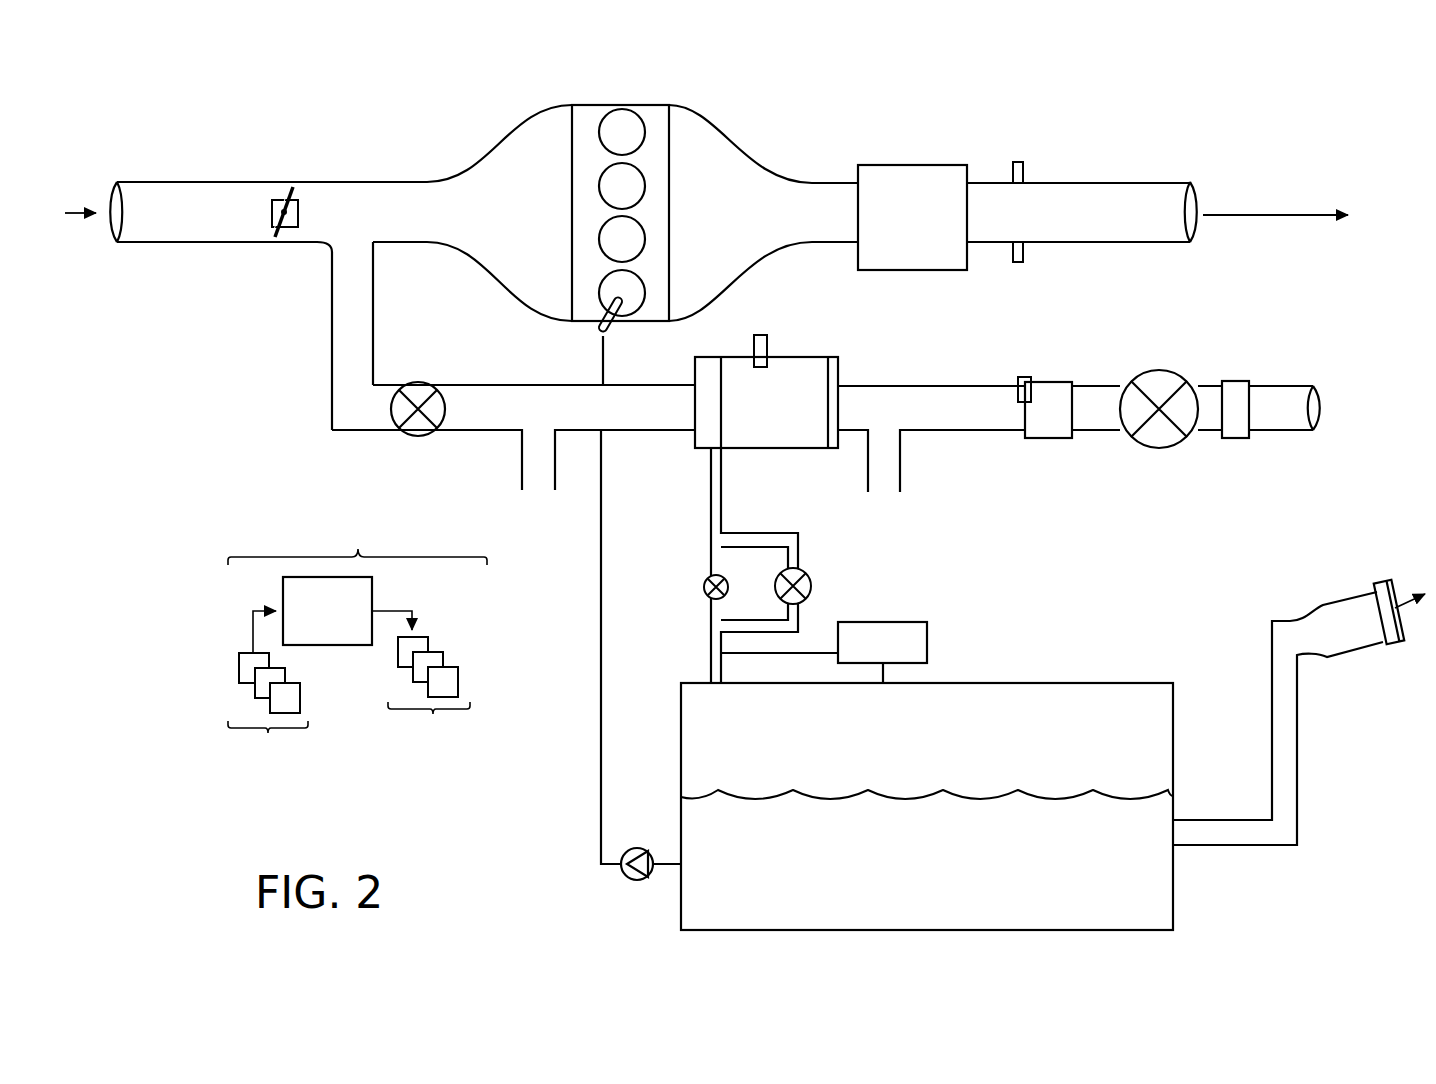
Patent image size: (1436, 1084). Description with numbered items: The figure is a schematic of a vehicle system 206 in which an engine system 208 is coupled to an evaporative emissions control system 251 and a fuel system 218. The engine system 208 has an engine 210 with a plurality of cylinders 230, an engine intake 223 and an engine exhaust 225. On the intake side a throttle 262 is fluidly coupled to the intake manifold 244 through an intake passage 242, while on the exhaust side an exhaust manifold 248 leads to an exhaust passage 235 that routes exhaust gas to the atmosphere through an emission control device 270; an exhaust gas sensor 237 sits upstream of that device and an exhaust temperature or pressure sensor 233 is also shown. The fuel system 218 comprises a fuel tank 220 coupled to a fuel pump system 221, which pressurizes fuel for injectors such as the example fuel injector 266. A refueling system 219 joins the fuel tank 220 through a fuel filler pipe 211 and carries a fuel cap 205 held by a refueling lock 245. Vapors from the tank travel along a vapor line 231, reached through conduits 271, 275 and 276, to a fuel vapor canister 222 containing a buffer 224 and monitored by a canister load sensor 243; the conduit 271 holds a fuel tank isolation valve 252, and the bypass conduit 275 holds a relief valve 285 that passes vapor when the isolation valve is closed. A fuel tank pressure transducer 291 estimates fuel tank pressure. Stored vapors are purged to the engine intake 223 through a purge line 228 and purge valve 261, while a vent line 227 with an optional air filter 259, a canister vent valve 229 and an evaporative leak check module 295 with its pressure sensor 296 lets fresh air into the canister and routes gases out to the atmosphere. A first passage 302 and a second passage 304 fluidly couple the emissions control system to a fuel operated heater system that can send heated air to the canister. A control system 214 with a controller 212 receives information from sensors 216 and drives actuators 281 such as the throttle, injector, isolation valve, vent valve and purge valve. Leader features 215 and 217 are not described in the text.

The fuel cap 205 is at (1403, 643).
The vehicle system 206 is at (148, 120).
The engine system 208 is at (1070, 128).
The engine 210 is at (669, 193).
The fuel filler pipe 211 is at (1297, 736).
The controller 212 is at (332, 615).
The control system 214 is at (357, 533).
The fuel vapor canister inlet 215 is at (695, 408).
The sensors 216 is at (268, 715).
The vent line opening 217 is at (928, 431).
The fuel system 218 is at (1227, 888).
The refueling system 219 is at (1305, 592).
The fuel tank 220 is at (1175, 788).
The fuel pump system 221 is at (639, 849).
The fuel vapor canister 222 is at (836, 357).
The engine intake 223 is at (491, 133).
The buffer 224 is at (712, 372).
The engine exhaust 225 is at (850, 115).
The vent line 227 is at (1079, 439).
The purge line 228 is at (513, 437).
The canister vent valve 229 is at (1153, 370).
The cylinders 230 is at (622, 132).
The vapor line 231 is at (676, 554).
The exhaust temperature or pressure sensor 233 is at (1013, 251).
The exhaust passage 235 is at (1140, 183).
The exhaust gas sensor 237 is at (1013, 172).
The intake passage 242 is at (317, 246).
The canister load sensor 243 is at (760, 335).
The intake manifold 244 is at (515, 213).
The refueling lock 245 is at (1382, 641).
The exhaust manifold 248 is at (763, 213).
The evaporative emissions control system 251 is at (1224, 334).
The fuel tank isolation valve 252 is at (704, 592).
The air filter 259 is at (1237, 381).
The purge valve 261 is at (418, 382).
The throttle 262 is at (300, 221).
The fuel injector 266 is at (613, 329).
The emission control device 270 is at (903, 165).
The conduit 271 is at (711, 633).
The bypass conduit 275 is at (798, 535).
The conduit 276 is at (711, 494).
The actuators 281 is at (431, 698).
The relief valve 285 is at (812, 585).
The fuel tank pressure transducer 291 is at (927, 622).
The evaporative leak check module 295 is at (1045, 383).
The pressure sensor 296 is at (1018, 378).
The first passage 302 is at (521, 460).
The second passage 304 is at (903, 481).